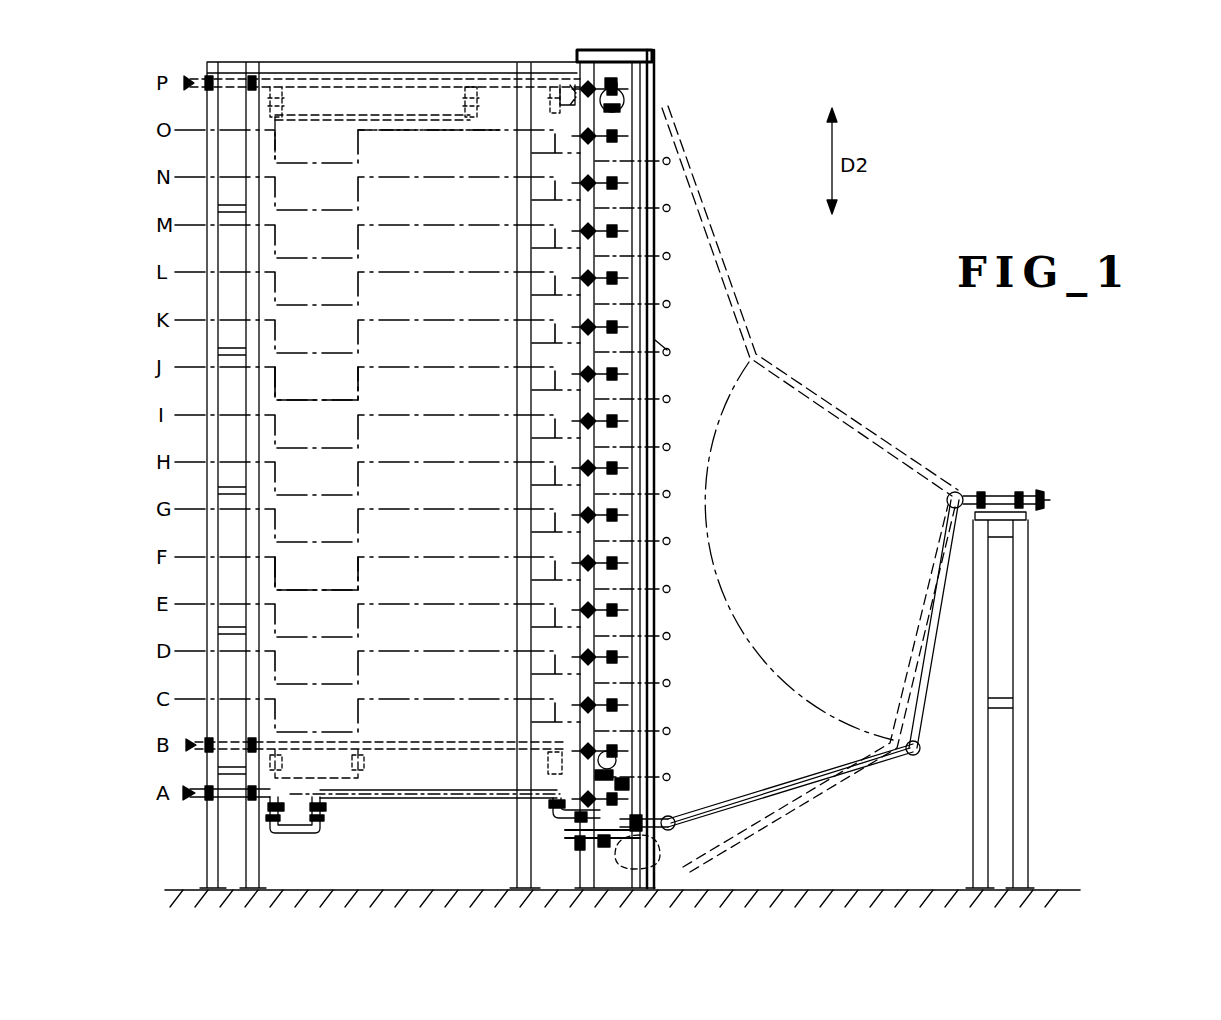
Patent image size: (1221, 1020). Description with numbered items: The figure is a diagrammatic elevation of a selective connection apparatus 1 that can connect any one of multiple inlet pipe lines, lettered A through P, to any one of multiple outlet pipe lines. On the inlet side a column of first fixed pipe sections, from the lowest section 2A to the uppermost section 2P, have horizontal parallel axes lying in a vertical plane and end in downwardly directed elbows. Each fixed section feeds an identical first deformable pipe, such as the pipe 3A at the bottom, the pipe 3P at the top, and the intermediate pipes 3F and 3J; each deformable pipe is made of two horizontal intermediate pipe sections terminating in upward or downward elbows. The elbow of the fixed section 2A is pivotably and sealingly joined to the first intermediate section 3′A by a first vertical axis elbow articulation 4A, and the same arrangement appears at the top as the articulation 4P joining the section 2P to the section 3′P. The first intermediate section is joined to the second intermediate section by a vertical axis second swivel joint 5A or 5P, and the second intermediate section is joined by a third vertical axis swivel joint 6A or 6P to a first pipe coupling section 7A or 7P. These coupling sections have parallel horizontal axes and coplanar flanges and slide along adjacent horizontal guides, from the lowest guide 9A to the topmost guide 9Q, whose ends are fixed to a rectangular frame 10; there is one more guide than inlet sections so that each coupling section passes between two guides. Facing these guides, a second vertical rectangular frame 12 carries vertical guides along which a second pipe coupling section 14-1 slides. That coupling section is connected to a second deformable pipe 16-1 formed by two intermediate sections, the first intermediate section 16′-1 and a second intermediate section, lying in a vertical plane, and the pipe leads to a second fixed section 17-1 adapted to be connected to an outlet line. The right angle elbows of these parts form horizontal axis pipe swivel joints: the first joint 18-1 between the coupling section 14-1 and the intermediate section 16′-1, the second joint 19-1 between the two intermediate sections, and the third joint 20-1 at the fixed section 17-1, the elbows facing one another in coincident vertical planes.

The selective connection apparatus 1 is at (940, 208).
The first fixed pipe section 2P is at (192, 83).
The first vertical axis elbow articulation 4P is at (288, 105).
The first deformable pipe 3P is at (358, 116).
The first intermediate pipe section 3′P is at (344, 120).
The second pipe swivel joint 5P is at (436, 130).
The third vertical axis pipe swivel joint 6P is at (650, 78).
The first pipe coupling section 7P is at (660, 103).
The horizontal guide 9Q is at (586, 95).
The rectangular frame 10 is at (655, 345).
The second vertical rectangular frame 12 is at (655, 689).
The first deformable pipe 3J is at (364, 376).
The first deformable pipe 3F is at (364, 564).
The first pipe coupling section 7A is at (642, 780).
The first horizontal axis pipe swivel joint 18-1 is at (668, 817).
The third vertical axis pipe swivel joint 6A is at (545, 815).
The horizontal guide 9A is at (578, 855).
The first fixed pipe section 2A is at (195, 797).
The first vertical axis elbow articulation 4A is at (268, 817).
The second pipe swivel joint 5A is at (322, 817).
The first deformable pipe 3A is at (380, 798).
The first intermediate pipe section 3′A is at (298, 840).
The second pipe coupling section 14-1 is at (655, 855).
The intermediate pipe section 16′-1 is at (785, 789).
The second deformable pipe 16-1 is at (882, 785).
The second horizontal axis pipe swivel joint 19-1 is at (917, 750).
The third horizontal axis pipe swivel joint 20-1 is at (957, 491).
The second fixed section 17-1 is at (1000, 496).